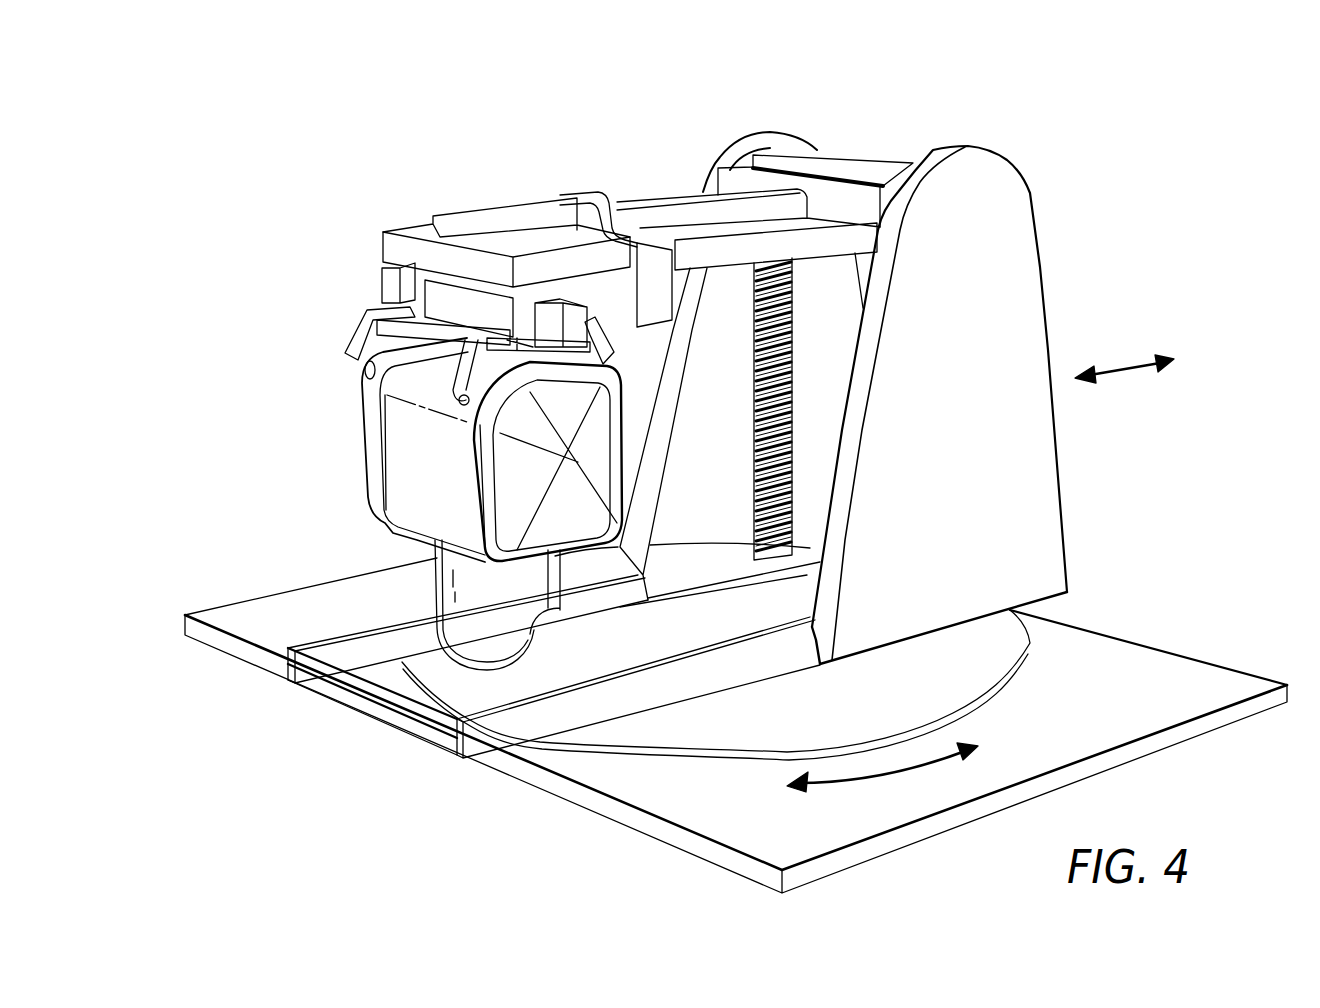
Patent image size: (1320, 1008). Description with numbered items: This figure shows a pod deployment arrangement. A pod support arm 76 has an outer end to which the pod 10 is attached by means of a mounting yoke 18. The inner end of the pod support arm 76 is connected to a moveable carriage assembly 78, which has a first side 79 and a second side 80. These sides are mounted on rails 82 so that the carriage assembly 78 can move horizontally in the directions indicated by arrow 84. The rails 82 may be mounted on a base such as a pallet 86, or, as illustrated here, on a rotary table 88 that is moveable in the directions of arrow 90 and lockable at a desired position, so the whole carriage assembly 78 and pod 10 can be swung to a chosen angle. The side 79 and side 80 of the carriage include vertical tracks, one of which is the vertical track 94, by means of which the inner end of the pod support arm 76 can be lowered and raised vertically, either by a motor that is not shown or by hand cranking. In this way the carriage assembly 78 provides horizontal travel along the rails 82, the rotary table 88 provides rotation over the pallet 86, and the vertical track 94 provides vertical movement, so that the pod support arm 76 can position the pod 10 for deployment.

The pod 10 is at (370, 452).
The mounting yoke 18 is at (388, 283).
The pod support arm 76 is at (498, 228).
The carriage assembly 78 is at (912, 128).
The first side 79 is at (747, 140).
The second side 80 is at (1002, 168).
The rails 82 is at (462, 742).
The arrow 84 is at (1123, 365).
The pallet 86 is at (1227, 683).
The rotary table 88 is at (1007, 688).
The arrow 90 is at (873, 780).
The vertical track 94 is at (757, 427).